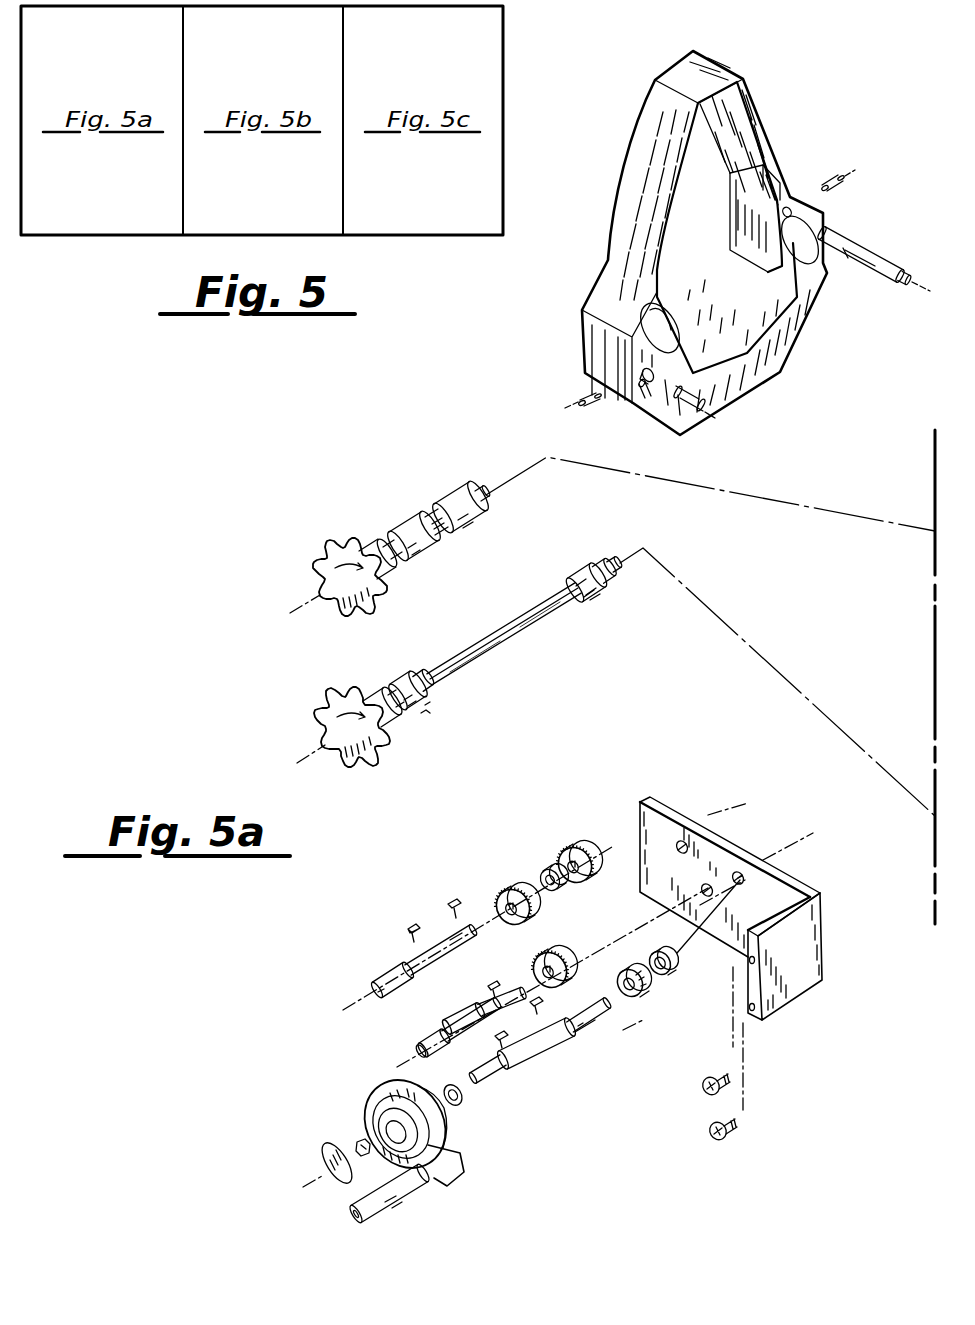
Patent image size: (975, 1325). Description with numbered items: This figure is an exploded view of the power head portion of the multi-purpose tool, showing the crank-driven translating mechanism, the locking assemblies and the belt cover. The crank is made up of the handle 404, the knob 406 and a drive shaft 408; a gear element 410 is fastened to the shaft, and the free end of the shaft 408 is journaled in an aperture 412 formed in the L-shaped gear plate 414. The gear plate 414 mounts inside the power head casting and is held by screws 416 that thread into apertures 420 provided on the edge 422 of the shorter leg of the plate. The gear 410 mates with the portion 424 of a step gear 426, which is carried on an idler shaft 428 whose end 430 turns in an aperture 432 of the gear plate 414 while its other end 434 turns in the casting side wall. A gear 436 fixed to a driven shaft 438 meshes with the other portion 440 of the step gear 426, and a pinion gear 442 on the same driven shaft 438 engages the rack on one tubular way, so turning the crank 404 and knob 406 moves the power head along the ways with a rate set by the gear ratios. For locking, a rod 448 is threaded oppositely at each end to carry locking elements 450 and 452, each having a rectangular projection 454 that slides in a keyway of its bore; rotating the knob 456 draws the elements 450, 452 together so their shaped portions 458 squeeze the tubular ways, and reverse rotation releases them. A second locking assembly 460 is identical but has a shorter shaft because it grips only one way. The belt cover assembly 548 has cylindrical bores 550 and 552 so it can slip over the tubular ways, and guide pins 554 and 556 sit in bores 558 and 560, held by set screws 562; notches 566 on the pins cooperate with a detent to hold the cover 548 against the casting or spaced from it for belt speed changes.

The handle 404 is at (387, 1213).
The knob 406 is at (383, 1090).
The drive shaft 408 is at (553, 1047).
The gear element 410 is at (640, 995).
The aperture 412 is at (747, 883).
The gear plate 414 is at (663, 803).
The screws 416 is at (710, 1125).
The threaded apertures 420 is at (749, 961).
The edge 422 is at (760, 990).
The portion of step gear 424 is at (583, 970).
The step gear 426 is at (552, 946).
The idler shaft 428 is at (447, 1023).
The end of idler shaft 430 is at (522, 992).
The aperture 432 is at (713, 887).
The end of idler shaft 434 is at (418, 1048).
The gear 436 is at (508, 888).
The driven shaft 438 is at (437, 940).
The portion of step gear 440 is at (537, 957).
The pinion gear 442 is at (573, 843).
The rod 448 is at (497, 627).
The locking element 450 is at (590, 563).
The locking element 452 is at (403, 683).
The rectangular projection 454 is at (420, 713).
The knob 456 is at (323, 698).
The shaped portions 458 is at (413, 673).
The locking assembly 460 is at (418, 508).
The belt cover assembly 548 is at (647, 152).
The cylindrical bore 550 is at (665, 300).
The cylindrical bore 552 is at (800, 212).
The guide pin 554 is at (678, 428).
The guide pin 556 is at (877, 257).
The bore 558 is at (645, 397).
The bore 560 is at (790, 208).
The set screws 562 is at (843, 172).
The notches 566 is at (843, 257).